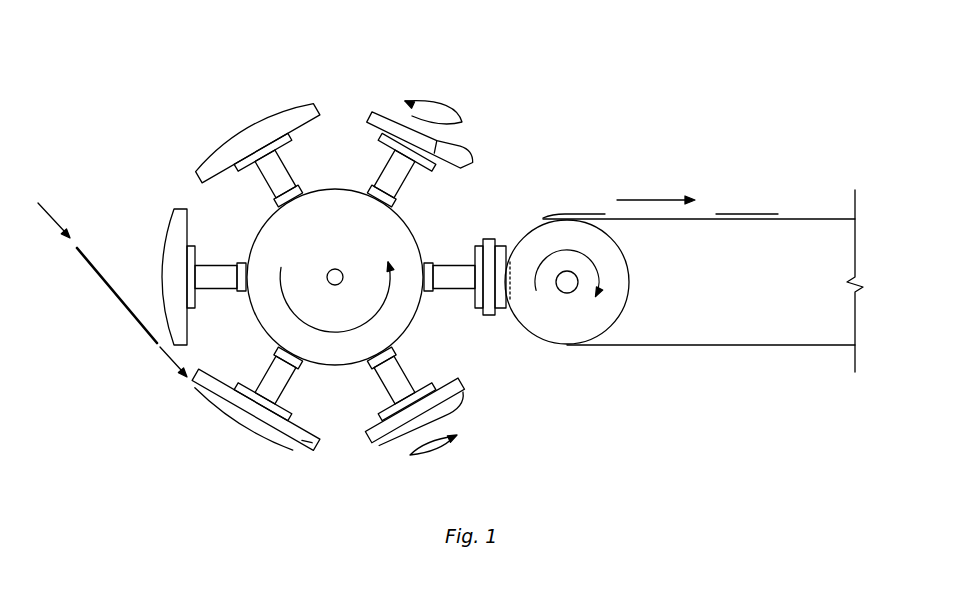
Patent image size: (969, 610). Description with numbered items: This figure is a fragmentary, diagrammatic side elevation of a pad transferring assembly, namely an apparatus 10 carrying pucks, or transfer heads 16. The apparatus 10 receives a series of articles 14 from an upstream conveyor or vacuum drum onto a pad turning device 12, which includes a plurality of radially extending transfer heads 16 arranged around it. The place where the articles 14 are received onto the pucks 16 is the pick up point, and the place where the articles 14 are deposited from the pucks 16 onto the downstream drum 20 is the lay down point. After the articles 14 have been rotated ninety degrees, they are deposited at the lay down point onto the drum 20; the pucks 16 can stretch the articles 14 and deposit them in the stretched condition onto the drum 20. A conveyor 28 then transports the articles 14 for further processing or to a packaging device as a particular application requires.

The apparatus 10 is at (540, 104).
The pad turning device 12 is at (331, 207).
The articles 14 is at (113, 292).
The transfer heads 16 is at (198, 173).
The downstream drum 20 is at (542, 340).
The conveyor 28 is at (742, 347).